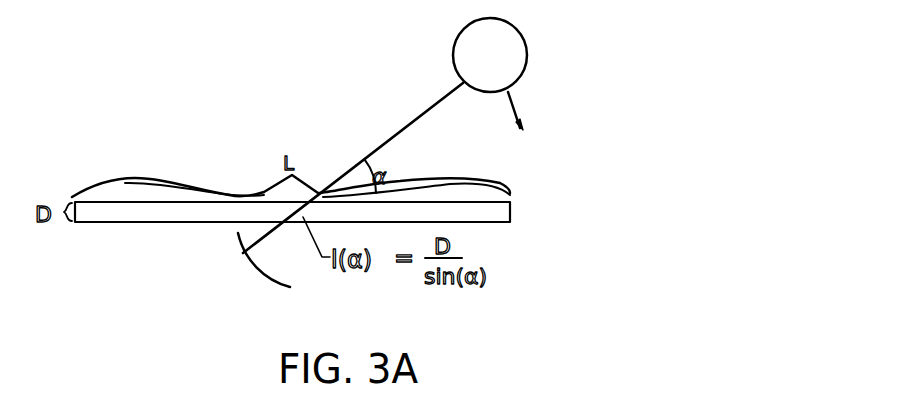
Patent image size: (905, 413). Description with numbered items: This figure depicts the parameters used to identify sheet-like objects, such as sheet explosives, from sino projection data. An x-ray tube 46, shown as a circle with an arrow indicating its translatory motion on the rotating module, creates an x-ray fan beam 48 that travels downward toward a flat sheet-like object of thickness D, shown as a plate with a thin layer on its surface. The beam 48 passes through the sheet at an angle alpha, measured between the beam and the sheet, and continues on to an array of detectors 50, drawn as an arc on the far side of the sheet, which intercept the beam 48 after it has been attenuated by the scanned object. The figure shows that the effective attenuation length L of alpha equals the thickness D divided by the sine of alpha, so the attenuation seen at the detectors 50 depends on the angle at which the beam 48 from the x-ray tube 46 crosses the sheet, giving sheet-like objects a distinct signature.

The x-ray tube 46 is at (515, 58).
The x-ray fan beam 48 is at (405, 128).
The array of detectors 50 is at (255, 278).